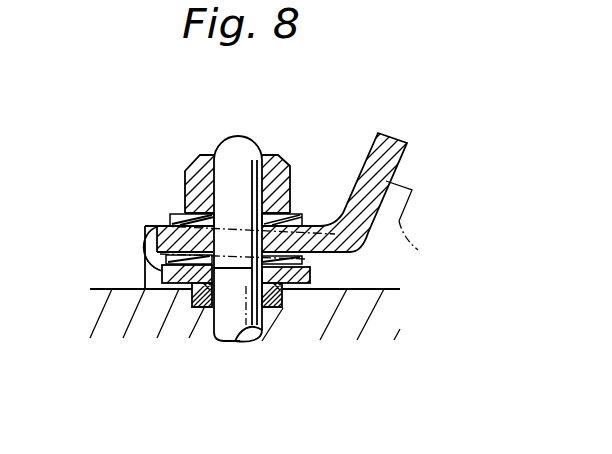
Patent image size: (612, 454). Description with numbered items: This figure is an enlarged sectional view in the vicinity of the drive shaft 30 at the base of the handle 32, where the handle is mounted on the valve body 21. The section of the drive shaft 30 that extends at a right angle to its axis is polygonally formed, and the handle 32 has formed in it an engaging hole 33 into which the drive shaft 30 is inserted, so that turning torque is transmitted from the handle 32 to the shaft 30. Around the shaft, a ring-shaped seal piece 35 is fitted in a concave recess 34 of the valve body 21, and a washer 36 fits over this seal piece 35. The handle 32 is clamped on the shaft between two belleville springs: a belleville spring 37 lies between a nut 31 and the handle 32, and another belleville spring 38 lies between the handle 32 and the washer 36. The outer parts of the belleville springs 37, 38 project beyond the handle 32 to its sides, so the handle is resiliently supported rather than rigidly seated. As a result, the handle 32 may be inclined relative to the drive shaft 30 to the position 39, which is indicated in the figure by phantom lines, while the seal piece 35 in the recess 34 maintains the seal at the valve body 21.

The valve body 21 is at (116, 300).
The drive shaft 30 is at (238, 157).
The nut 31 is at (200, 170).
The handle 32 is at (387, 150).
The engaging hole 33 is at (288, 285).
The concave recess 34 is at (184, 297).
The seal piece 35 is at (203, 304).
The washer 36 is at (145, 246).
The belleville spring 37 is at (285, 220).
The belleville spring 38 is at (302, 258).
The inclined position 39 is at (419, 229).